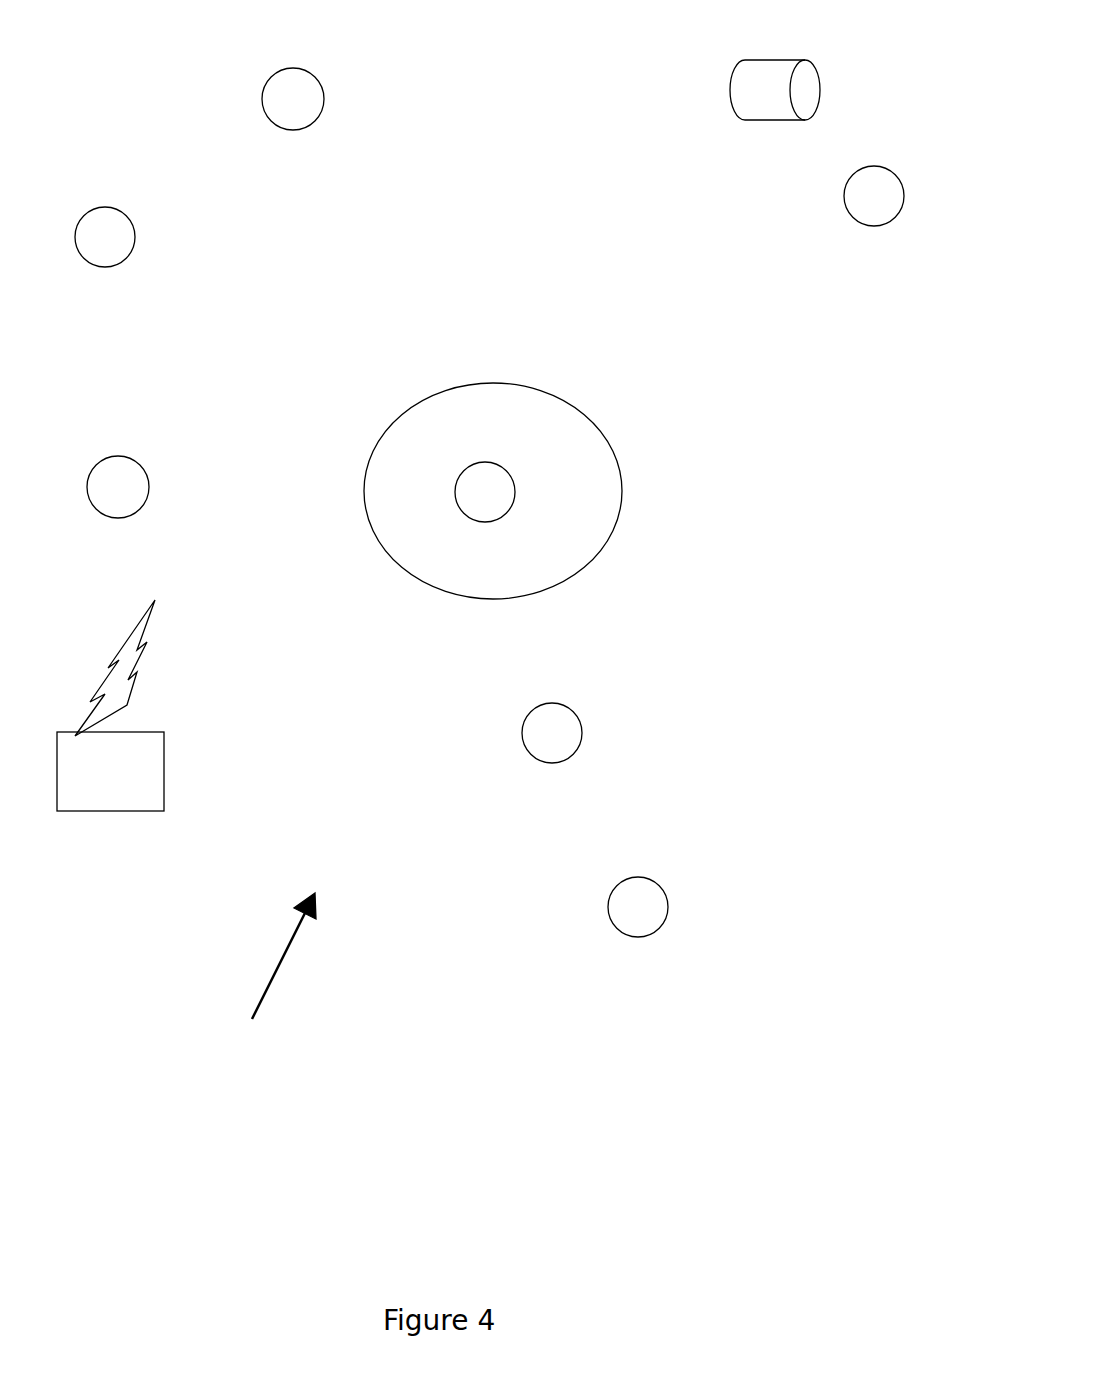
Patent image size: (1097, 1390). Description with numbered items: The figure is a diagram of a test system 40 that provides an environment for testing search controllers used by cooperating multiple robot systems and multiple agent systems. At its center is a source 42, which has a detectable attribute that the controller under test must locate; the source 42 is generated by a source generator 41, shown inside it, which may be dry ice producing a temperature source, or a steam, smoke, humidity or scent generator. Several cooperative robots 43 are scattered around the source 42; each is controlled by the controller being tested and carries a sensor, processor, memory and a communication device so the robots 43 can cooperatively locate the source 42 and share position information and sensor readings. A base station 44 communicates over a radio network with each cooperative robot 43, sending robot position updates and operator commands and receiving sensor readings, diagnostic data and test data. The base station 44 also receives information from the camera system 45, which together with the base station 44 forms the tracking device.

The test system 40 is at (261, 979).
The source generator 41 is at (604, 461).
The source 42 is at (500, 467).
The cooperative robots 43 is at (148, 455).
The base station 44 is at (148, 705).
The camera system 45 is at (813, 66).